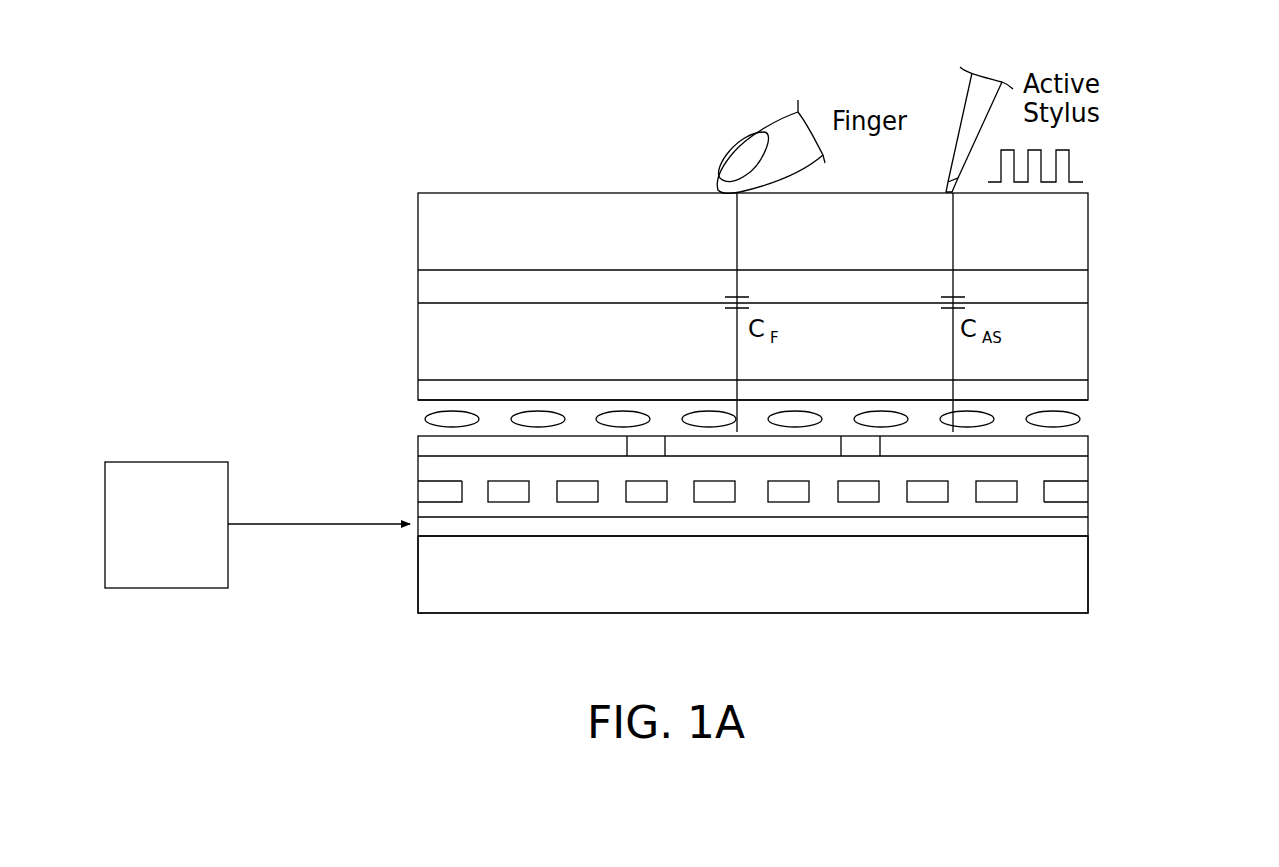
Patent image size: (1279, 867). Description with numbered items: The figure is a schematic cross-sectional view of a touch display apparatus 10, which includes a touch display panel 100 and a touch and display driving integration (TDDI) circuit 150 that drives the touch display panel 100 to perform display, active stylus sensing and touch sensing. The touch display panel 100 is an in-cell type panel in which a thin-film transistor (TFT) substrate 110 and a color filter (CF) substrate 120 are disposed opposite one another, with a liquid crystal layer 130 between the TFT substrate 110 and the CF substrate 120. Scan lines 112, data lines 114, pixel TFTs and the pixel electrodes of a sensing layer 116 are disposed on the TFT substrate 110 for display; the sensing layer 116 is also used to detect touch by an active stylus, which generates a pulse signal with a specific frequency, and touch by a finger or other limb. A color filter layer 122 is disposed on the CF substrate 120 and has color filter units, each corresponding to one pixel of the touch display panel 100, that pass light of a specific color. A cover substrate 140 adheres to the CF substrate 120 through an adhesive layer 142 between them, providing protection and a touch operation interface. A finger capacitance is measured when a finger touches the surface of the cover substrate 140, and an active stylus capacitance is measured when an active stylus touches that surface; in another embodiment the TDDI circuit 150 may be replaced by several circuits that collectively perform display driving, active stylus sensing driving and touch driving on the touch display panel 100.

The touch display apparatus 10 is at (1266, 88).
The touch display panel 100 is at (1132, 203).
The thin-film transistor (TFT) substrate 110 is at (1090, 580).
The scan lines 112 is at (1090, 530).
The data lines 114 is at (1090, 493).
The sensing layer 116 is at (1090, 449).
The color filter (CF) substrate 120 is at (426, 333).
The color filter layer 122 is at (436, 390).
The liquid crystal layer 130 is at (410, 419).
The cover substrate 140 is at (426, 238).
The adhesive layer 142 is at (426, 288).
The touch and display driving integration (TDDI) circuit 150 is at (167, 589).